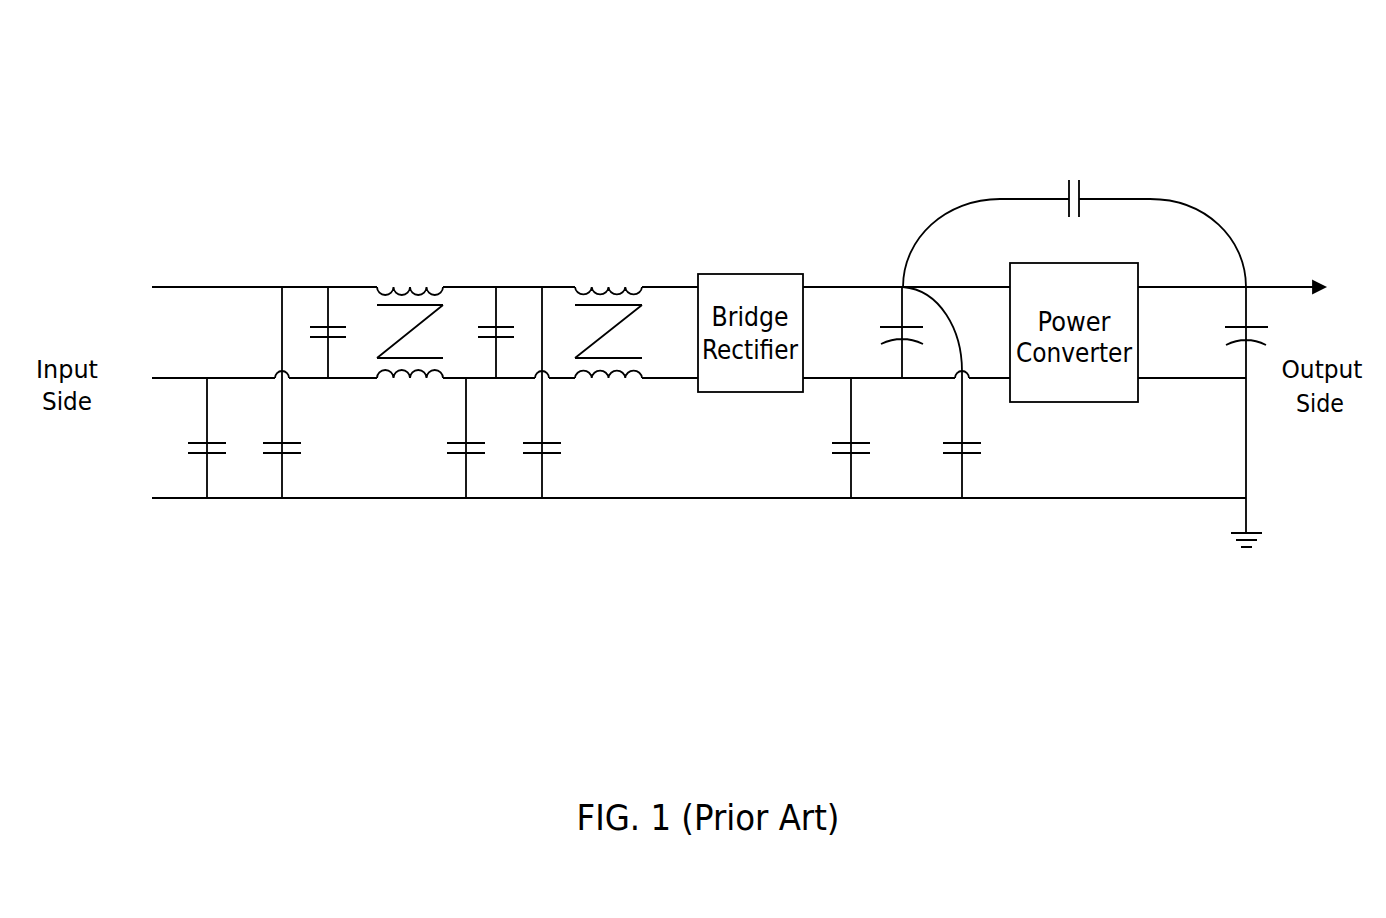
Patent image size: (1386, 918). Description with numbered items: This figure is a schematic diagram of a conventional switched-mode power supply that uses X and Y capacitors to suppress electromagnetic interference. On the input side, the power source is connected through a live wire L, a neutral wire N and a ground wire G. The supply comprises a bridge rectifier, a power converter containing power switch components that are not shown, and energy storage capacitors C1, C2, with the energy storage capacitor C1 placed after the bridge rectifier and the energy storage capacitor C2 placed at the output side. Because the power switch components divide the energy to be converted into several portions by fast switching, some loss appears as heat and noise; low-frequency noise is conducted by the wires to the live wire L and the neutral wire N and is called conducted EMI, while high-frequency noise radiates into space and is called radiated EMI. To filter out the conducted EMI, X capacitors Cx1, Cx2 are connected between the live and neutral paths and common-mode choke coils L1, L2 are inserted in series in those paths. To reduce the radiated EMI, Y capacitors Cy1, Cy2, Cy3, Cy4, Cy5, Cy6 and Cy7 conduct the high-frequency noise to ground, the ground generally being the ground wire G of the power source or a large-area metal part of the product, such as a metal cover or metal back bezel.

The live wire L is at (723, 287).
The neutral wire N is at (684, 380).
The ground wire G is at (685, 497).
The Y capacitor Cy1 is at (184, 438).
The Y capacitor Cy2 is at (305, 392).
The Y capacitor Cy3 is at (443, 438).
The Y capacitor Cy4 is at (565, 392).
The Y capacitor Cy5 is at (872, 438).
The Y capacitor Cy6 is at (967, 392).
The Y capacitor Cy7 is at (1074, 224).
The X capacitor Cx1 is at (349, 332).
The X capacitor Cx2 is at (473, 332).
The common-mode choke coil L1 is at (410, 315).
The common-mode choke coil L2 is at (608, 315).
The energy storage capacitor C1 is at (882, 332).
The energy storage capacitor C2 is at (1225, 417).